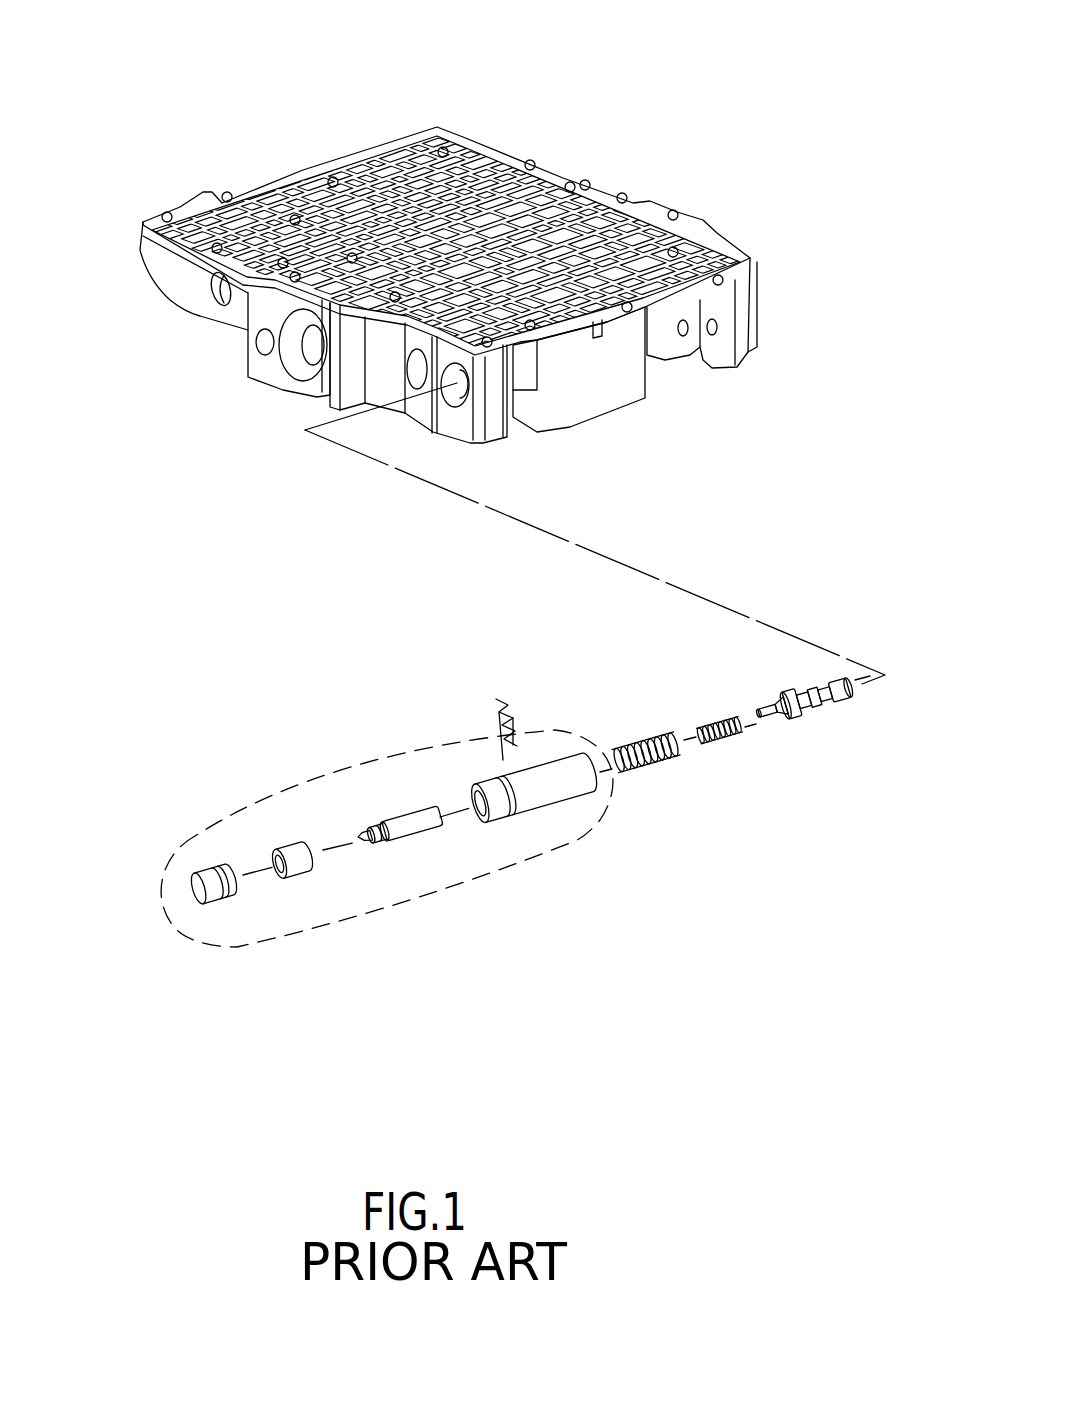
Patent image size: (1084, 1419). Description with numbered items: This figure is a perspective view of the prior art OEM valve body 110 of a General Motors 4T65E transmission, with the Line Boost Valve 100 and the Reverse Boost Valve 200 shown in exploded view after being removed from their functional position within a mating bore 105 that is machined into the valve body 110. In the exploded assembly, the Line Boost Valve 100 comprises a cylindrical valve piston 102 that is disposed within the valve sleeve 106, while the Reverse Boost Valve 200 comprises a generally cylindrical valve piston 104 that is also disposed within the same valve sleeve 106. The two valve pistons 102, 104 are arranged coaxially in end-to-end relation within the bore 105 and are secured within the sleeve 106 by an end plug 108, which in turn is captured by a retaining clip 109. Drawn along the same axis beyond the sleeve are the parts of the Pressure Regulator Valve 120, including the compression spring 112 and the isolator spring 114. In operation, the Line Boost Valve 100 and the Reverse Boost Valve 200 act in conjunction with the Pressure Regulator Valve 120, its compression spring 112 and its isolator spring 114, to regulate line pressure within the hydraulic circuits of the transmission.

The valve body 110 is at (325, 123).
The mating bore 105 is at (470, 448).
The Reverse Boost Valve 200 is at (396, 780).
The Line Boost Valve 100 is at (281, 815).
The end plug 108 is at (220, 898).
The cylindrical valve piston 102 is at (303, 877).
The valve piston 104 is at (407, 843).
The valve sleeve 106 is at (551, 808).
The retaining clip 109 is at (520, 719).
The compression spring 112 is at (653, 767).
The isolator spring 114 is at (723, 735).
The Pressure Regulator Valve 120 is at (808, 713).